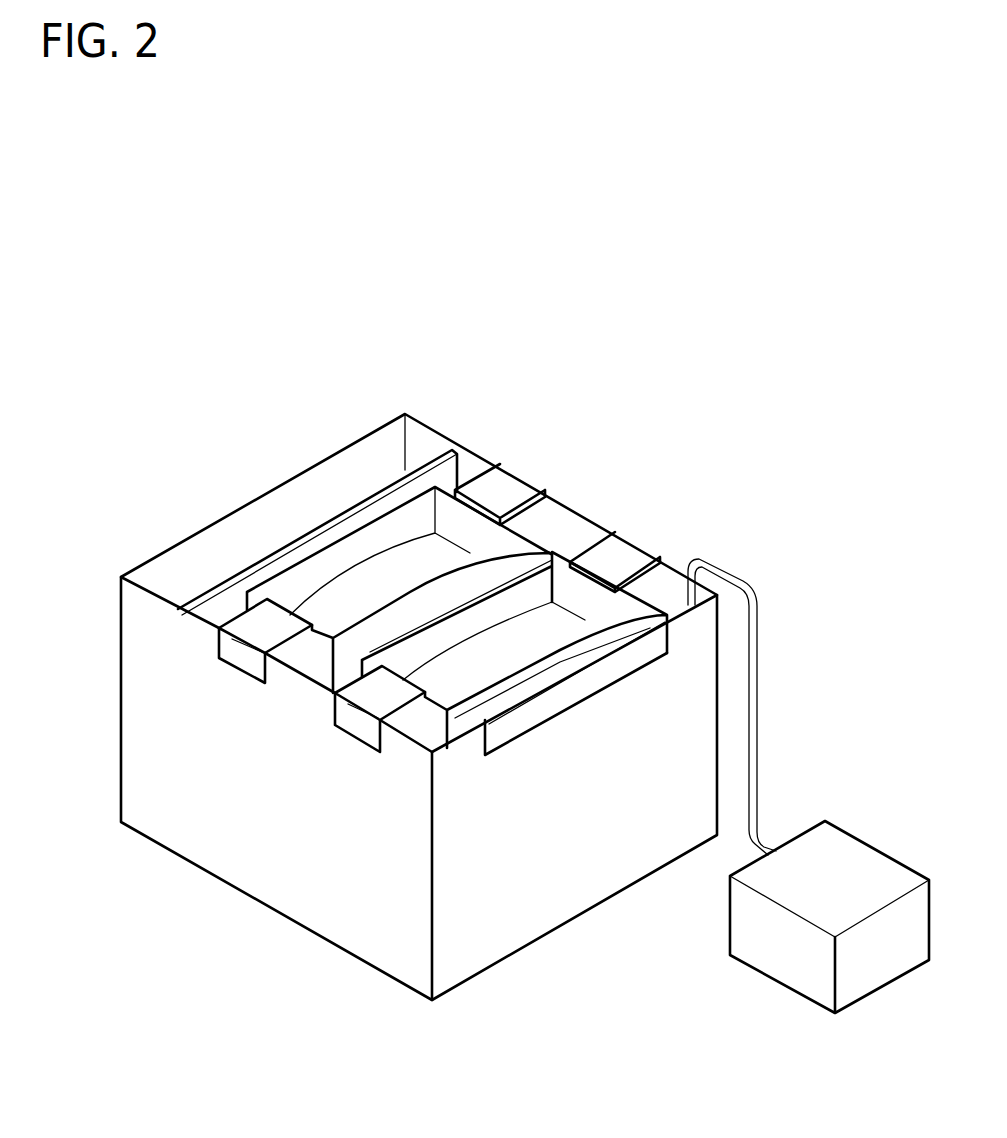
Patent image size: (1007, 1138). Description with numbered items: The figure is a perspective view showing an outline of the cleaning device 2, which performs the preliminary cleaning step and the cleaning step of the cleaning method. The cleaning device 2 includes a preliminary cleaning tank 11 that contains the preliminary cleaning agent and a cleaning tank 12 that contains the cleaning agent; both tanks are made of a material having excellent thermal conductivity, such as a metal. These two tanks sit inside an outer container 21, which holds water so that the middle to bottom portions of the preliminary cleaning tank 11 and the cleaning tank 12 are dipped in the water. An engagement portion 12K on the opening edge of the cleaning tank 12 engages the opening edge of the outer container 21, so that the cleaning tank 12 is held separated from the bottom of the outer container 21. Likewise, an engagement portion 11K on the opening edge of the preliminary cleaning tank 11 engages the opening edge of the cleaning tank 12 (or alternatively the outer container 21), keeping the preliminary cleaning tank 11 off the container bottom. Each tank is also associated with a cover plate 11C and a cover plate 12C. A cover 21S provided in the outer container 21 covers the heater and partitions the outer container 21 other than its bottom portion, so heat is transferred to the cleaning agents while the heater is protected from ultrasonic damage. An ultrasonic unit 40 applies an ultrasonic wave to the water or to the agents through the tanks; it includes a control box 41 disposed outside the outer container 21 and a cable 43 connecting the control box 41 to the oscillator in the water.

The cleaning device 2 is at (430, 691).
The outer container 21 is at (485, 945).
The cover 21S is at (438, 456).
The preliminary cleaning tank 11 is at (407, 527).
The engagement portion 11K is at (509, 486).
The cover plate 11C is at (546, 575).
The cleaning tank 12 is at (515, 702).
The engagement portion 12K is at (626, 554).
The cover plate 12C is at (585, 690).
The ultrasonic unit 40 is at (808, 786).
The control box 41 is at (842, 891).
The cable 43 is at (759, 757).